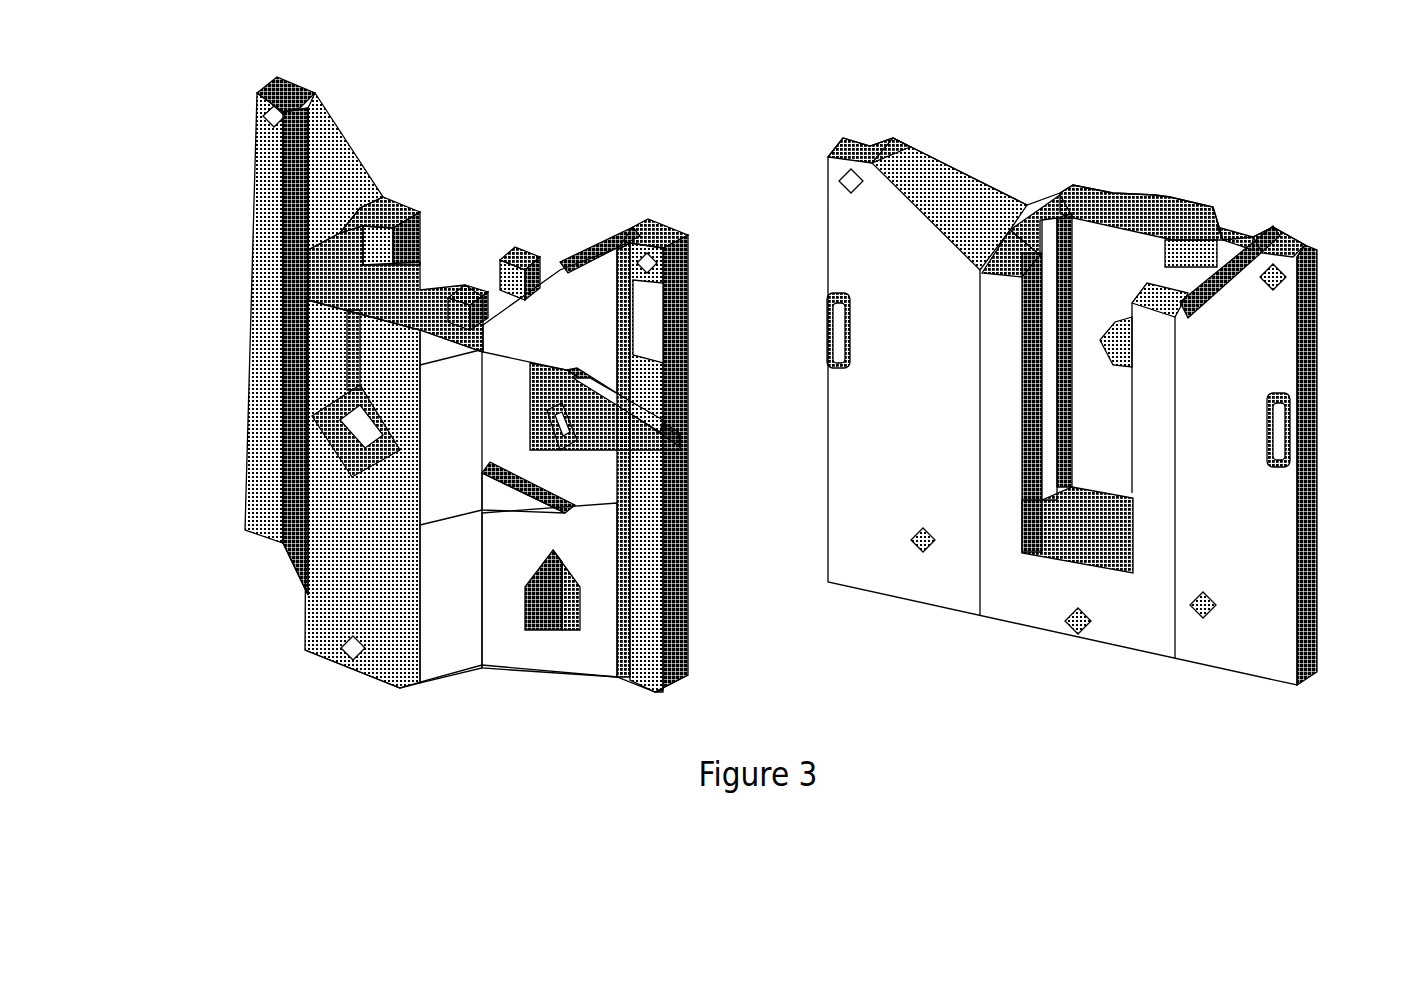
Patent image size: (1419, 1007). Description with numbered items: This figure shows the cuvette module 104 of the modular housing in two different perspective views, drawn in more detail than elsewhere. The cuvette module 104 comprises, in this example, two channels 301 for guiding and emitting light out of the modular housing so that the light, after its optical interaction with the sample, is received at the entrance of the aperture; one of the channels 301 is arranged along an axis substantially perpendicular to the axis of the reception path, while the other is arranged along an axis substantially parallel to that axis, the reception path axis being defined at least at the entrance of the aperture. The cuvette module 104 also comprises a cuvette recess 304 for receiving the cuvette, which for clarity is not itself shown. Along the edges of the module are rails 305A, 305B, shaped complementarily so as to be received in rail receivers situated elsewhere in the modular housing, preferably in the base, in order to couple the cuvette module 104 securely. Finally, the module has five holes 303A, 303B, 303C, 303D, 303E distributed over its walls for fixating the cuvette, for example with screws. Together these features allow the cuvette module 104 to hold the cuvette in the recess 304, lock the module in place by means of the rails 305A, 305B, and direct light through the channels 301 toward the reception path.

The cuvette module 104 is at (788, 148).
The channels 301 is at (365, 435).
The hole 303A is at (276, 127).
The hole 303B is at (300, 530).
The hole 303C is at (353, 655).
The hole 303D is at (575, 595).
The hole 303E is at (660, 275).
The cuvette recess 304 is at (1103, 497).
The rail 305A is at (837, 293).
The rail 305B is at (1293, 390).